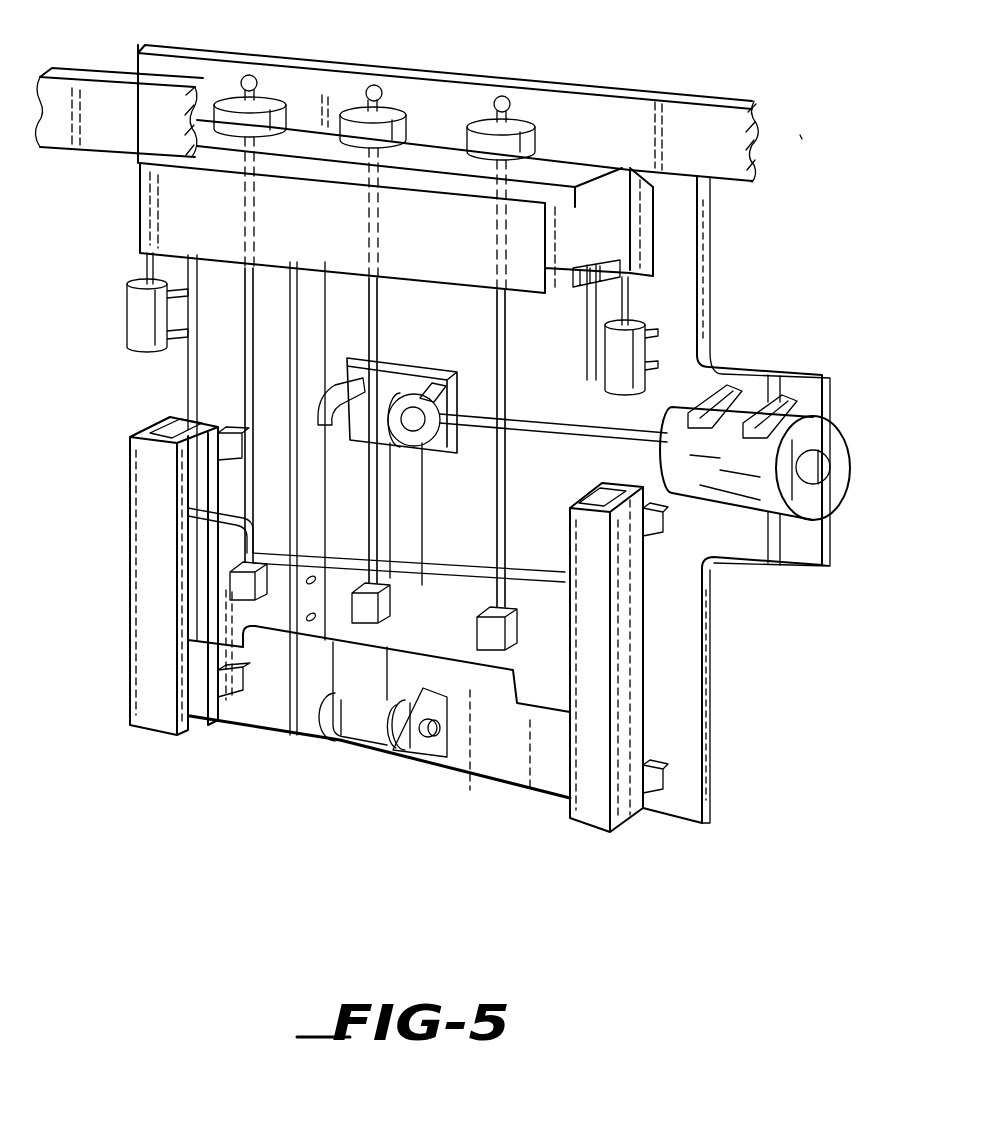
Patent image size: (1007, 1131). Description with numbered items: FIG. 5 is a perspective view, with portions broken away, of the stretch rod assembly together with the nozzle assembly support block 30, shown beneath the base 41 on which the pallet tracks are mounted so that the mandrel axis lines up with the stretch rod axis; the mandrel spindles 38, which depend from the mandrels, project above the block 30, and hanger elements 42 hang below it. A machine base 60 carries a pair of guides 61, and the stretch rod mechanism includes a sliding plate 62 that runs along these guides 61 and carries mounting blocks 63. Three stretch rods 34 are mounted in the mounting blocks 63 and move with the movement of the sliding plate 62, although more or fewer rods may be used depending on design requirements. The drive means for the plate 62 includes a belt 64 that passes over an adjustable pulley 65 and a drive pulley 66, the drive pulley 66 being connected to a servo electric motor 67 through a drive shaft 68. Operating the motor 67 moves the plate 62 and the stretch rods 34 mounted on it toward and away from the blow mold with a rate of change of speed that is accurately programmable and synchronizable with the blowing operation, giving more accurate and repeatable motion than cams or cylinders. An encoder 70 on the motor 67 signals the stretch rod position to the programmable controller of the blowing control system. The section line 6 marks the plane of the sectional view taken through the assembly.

The support block 30 is at (162, 222).
The stretch rods 34 is at (253, 290).
The mandrel spindle 38 is at (278, 113).
The base 41 is at (690, 120).
The hanger cylinder 42 is at (143, 327).
The machine base 60 is at (680, 697).
The guides 61 is at (162, 713).
The sliding plate 62 is at (553, 710).
The mounting blocks 63 is at (242, 586).
The belt 64 is at (365, 710).
The adjustable pulley 65 is at (438, 740).
The drive pulley 66 is at (410, 393).
The servo electric motor 67 is at (820, 500).
The drive shaft 68 is at (538, 437).
The encoder 70 is at (822, 472).
The section line 6 is at (463, 268).